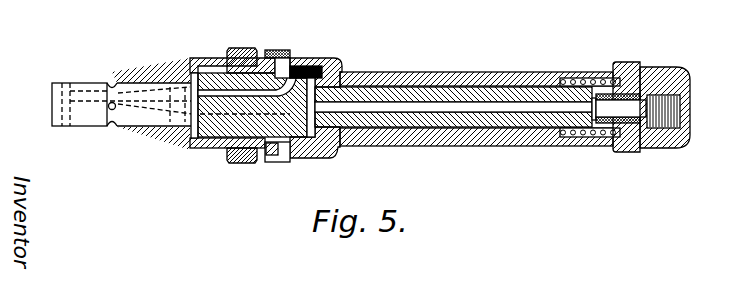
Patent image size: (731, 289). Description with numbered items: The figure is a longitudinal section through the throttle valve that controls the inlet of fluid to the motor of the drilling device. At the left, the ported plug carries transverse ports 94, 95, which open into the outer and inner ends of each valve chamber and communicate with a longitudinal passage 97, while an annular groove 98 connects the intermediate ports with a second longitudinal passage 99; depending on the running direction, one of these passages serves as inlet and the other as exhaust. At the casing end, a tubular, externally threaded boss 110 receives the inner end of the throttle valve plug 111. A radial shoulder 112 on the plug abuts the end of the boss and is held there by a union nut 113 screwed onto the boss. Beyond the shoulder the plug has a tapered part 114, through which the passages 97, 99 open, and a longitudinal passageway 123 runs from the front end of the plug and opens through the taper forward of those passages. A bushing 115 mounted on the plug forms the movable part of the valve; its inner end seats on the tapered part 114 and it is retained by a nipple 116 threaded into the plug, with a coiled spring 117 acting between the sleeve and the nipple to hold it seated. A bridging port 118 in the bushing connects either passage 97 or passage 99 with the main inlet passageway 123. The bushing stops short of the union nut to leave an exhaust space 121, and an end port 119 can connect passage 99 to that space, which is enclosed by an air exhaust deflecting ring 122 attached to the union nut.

The port 94 is at (166, 120).
The port 95 is at (62, 118).
The longitudinal passage 97 is at (88, 91).
The annular groove 98 is at (112, 127).
The longitudinal passage 99 is at (142, 117).
The tubular externally threaded boss 110 is at (206, 62).
The throttle valve plug 111 is at (362, 92).
The radial shoulder 112 is at (222, 153).
The union nut 113 is at (247, 48).
The tapered part 114 is at (296, 60).
The bushing or sleeve 115 is at (470, 78).
The nipple 116 is at (660, 75).
The coiled spring 117 is at (567, 140).
The bridging port 118 is at (332, 62).
The port 119 is at (305, 153).
The exhaust space 121 is at (292, 160).
The air exhaust deflecting ring 122 is at (270, 50).
The longitudinal passageway 123 is at (462, 107).